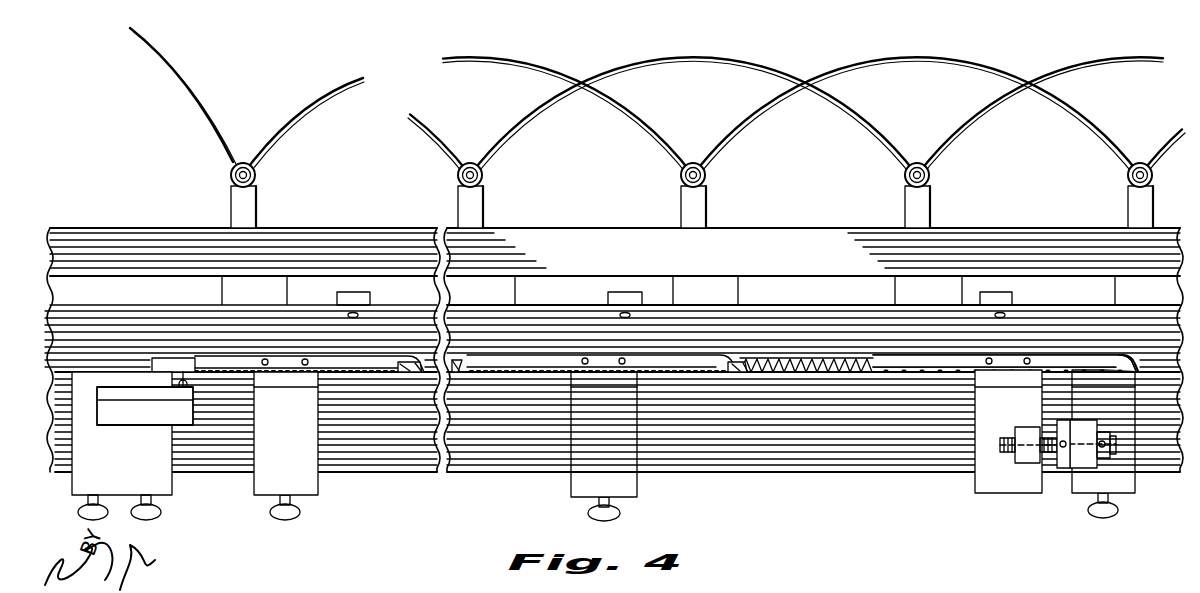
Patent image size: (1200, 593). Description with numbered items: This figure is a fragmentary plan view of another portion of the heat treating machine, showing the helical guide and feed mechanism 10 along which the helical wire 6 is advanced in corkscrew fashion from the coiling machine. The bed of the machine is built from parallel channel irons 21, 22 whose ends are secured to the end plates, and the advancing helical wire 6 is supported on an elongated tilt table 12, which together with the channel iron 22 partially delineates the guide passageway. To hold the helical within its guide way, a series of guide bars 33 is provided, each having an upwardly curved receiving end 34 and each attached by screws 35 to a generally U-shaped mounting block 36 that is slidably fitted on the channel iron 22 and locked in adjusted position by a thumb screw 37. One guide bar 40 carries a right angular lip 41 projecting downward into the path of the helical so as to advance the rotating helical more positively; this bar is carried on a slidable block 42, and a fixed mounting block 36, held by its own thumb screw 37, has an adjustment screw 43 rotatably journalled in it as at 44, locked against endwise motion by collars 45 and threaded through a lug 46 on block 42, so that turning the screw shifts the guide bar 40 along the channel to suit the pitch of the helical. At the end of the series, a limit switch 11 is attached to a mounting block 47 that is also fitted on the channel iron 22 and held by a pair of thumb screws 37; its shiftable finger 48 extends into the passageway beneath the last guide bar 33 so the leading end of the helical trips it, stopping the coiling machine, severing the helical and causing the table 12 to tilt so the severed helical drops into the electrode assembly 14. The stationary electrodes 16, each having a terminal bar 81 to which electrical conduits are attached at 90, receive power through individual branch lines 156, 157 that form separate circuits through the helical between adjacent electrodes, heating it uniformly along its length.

The helical wire 6 is at (805, 405).
The helical guide and feed mechanism 10 is at (524, 468).
The limit switch 11 is at (130, 410).
The tilt table 12 is at (786, 312).
The electrode assembly 14 is at (490, 187).
The stationary electrode 16 is at (226, 204).
The channel iron 21 is at (592, 246).
The channel iron 22 is at (718, 440).
The guide bar 33 is at (246, 360).
The upwardly curved receiving end 34 is at (413, 356).
The screw 35 is at (1030, 360).
The mounting block 36 is at (305, 482).
The thumb screw 37 is at (105, 512).
The guide bar with lip 40 is at (890, 358).
The right angular lip 41 is at (880, 385).
The block 42 is at (1012, 483).
The adjustment screw 43 is at (1005, 447).
The journal 44 is at (1080, 462).
The collar 45 is at (1103, 436).
The lug 46 is at (1024, 430).
The mounting block 47 is at (85, 483).
The shiftable finger 48 is at (190, 372).
The terminal bar 81 is at (478, 210).
The conduit attachment 90 is at (257, 175).
The branch line 156 is at (683, 60).
The branch line 157 is at (930, 58).